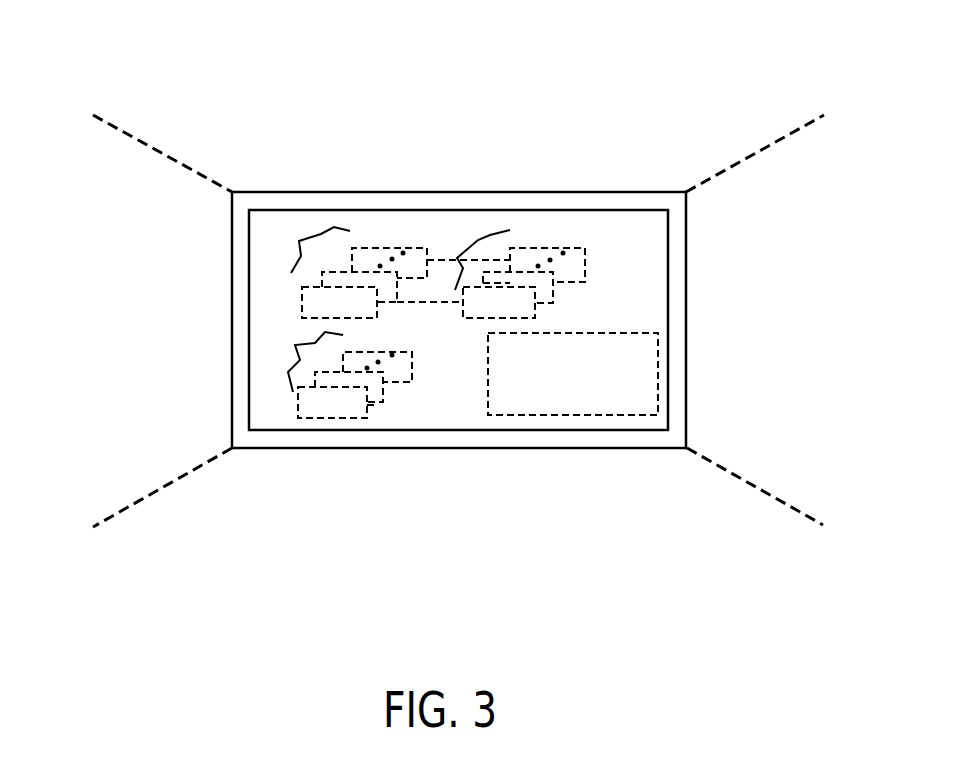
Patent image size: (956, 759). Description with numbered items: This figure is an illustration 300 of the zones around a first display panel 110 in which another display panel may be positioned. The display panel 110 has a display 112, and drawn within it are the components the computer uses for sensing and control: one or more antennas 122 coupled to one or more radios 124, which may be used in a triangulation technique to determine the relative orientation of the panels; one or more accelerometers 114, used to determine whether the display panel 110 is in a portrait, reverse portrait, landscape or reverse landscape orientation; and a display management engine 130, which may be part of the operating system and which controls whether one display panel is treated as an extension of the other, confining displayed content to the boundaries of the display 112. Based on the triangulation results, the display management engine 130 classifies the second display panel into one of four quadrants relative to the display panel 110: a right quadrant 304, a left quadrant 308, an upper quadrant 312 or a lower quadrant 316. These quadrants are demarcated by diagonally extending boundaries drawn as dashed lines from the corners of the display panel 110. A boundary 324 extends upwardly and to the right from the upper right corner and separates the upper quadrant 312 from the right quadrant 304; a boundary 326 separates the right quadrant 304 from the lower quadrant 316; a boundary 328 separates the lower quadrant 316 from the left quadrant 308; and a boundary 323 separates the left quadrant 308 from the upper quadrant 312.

The system / operating environment 300 is at (645, 52).
The display panel 110 is at (572, 448).
The display 112 is at (643, 262).
The accelerometer 114 is at (334, 369).
The antenna 122 is at (383, 267).
The radio 124 is at (503, 267).
The display management engine 130 is at (488, 375).
The right quadrant 304 is at (800, 348).
The left quadrant 308 is at (157, 348).
The upper quadrant 312 is at (465, 152).
The lower quadrant 316 is at (464, 554).
The upper-left corner line 323 is at (160, 153).
The boundary 324 is at (756, 155).
The boundary 326 is at (757, 488).
The boundary 328 is at (160, 487).